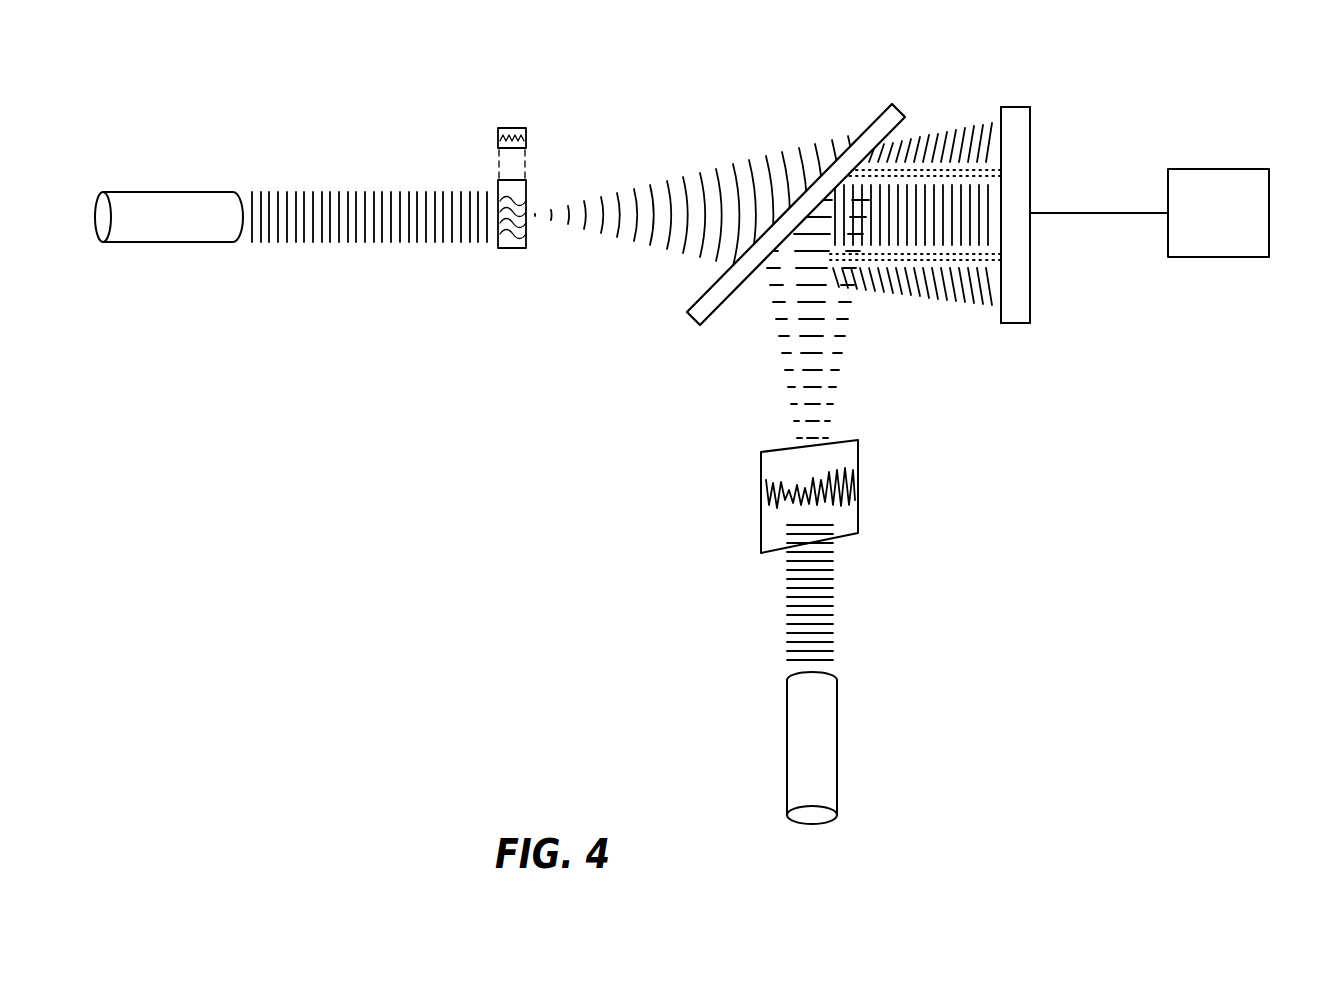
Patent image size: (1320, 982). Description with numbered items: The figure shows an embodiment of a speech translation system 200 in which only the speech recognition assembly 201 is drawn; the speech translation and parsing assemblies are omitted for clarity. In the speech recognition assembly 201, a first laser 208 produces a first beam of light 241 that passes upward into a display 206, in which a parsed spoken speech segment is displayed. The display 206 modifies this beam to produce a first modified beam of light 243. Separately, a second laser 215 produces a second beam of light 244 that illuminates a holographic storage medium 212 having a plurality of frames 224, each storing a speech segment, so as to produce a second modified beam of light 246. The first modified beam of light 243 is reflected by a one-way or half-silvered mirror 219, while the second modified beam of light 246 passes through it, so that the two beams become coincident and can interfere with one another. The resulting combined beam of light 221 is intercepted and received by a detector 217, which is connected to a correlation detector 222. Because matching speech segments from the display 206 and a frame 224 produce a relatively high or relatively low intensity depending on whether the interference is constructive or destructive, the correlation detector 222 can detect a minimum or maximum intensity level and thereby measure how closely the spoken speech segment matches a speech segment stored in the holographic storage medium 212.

The speech translation system 200 is at (807, 50).
The speech recognition assembly 201 is at (1064, 76).
The second laser 215 is at (183, 200).
The second beam of light 244 is at (363, 210).
The frames 224 is at (526, 140).
The holographic storage medium 212 is at (510, 250).
The second modified beam of light 246 is at (703, 185).
The one-way mirror 219 is at (878, 125).
The combined beam of light 221 is at (962, 128).
The detector 217 is at (1030, 255).
The correlation detector 222 is at (1213, 178).
The first modified beam of light 243 is at (830, 338).
The display 206 is at (858, 488).
The first beam of light 241 is at (815, 610).
The first laser 208 is at (830, 745).